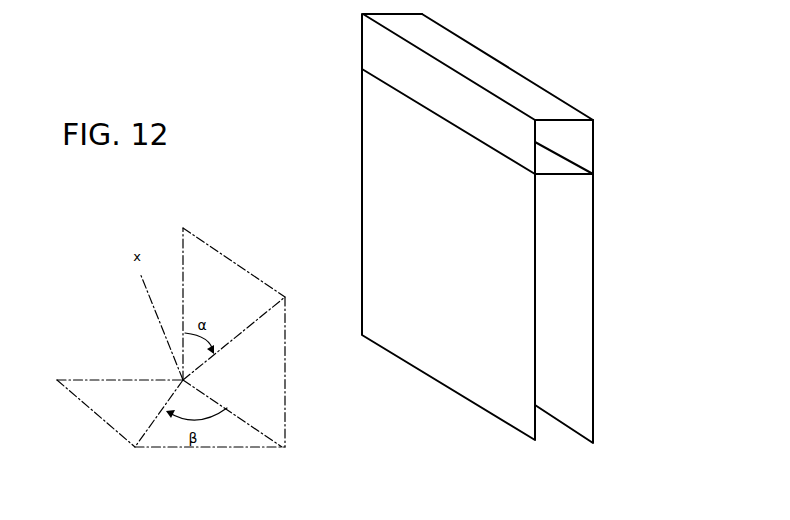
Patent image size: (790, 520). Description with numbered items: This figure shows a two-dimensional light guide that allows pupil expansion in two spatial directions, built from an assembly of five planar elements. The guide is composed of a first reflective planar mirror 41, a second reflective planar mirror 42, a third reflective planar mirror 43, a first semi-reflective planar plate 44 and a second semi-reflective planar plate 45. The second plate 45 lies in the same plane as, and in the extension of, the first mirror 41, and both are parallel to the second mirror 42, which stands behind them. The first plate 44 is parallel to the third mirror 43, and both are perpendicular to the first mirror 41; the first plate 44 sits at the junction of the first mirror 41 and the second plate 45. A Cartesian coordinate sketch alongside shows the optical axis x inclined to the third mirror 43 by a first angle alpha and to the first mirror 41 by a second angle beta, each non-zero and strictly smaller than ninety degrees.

The first reflective planar mirror 41 is at (375, 48).
The second reflective planar mirror 42 is at (593, 275).
The third reflective planar mirror 43 is at (540, 100).
The first semi-reflective planar plate 44 is at (567, 177).
The second semi-reflective planar plate 45 is at (375, 154).